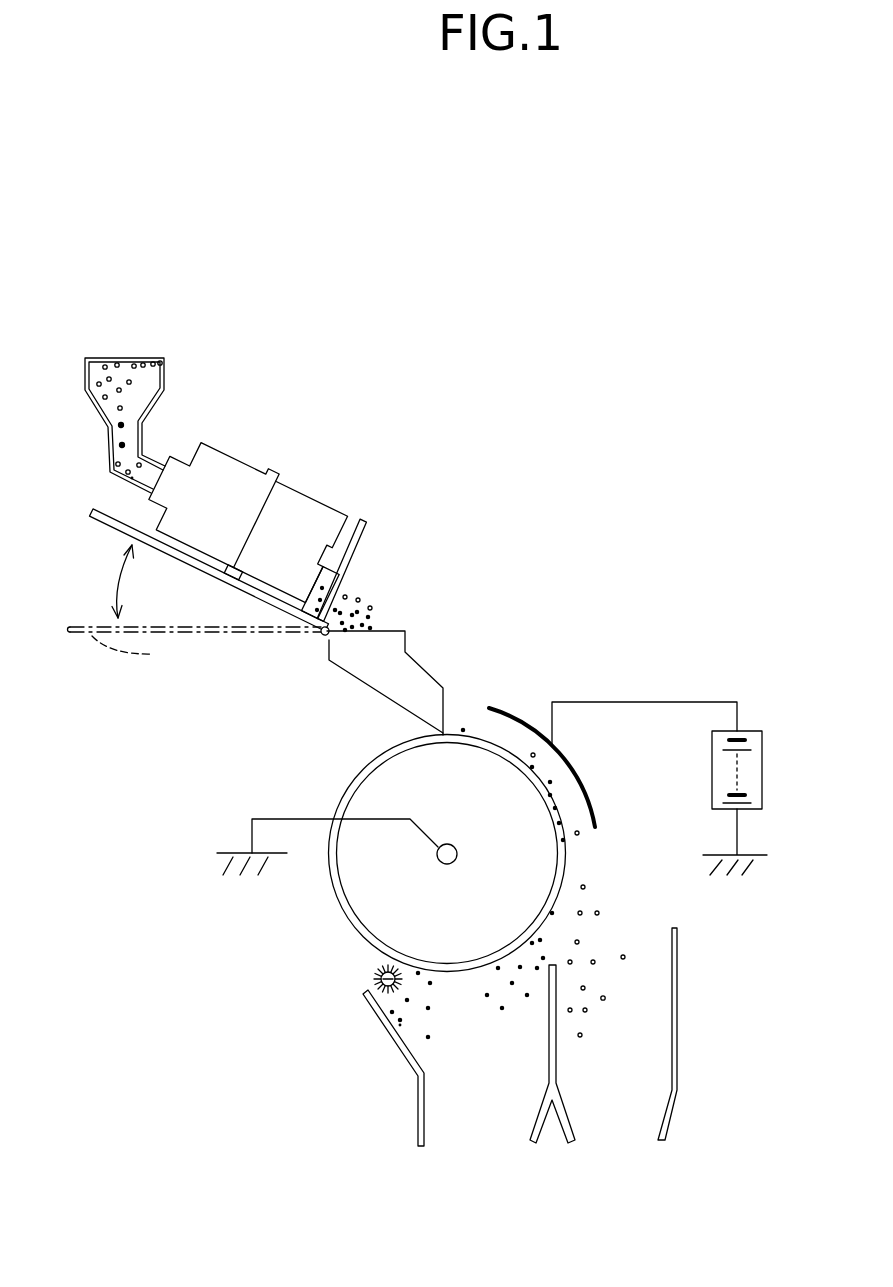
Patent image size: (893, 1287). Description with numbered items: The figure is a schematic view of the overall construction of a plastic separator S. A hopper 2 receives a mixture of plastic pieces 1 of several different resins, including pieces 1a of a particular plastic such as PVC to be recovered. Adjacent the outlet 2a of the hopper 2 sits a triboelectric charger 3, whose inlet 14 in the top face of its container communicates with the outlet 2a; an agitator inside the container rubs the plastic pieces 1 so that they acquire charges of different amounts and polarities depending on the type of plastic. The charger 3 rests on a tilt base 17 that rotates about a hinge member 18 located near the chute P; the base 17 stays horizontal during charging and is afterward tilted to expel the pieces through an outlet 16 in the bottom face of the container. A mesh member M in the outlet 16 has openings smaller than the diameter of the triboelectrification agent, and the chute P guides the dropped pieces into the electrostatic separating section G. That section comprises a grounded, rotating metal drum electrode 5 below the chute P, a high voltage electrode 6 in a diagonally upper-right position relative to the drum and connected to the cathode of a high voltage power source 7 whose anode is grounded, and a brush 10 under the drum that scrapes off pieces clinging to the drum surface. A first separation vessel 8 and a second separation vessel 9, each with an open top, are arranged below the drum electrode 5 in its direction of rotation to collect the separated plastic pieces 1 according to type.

The plastic pieces 1 is at (127, 377).
The pieces of a particular plastic 1a is at (110, 465).
The hopper 2 is at (163, 377).
The outlet 2a is at (114, 529).
The triboelectric charger 3 is at (320, 500).
The metal drum electrode 5 is at (342, 897).
The high voltage electrode 6 is at (577, 767).
The high voltage power source 7 is at (763, 767).
The first separation vessel 8 is at (679, 1053).
The second separation vessel 9 is at (418, 1100).
The brush 10 is at (377, 979).
The inlet 14 is at (162, 480).
The outlet 16 is at (296, 614).
The tilt base 17 is at (186, 568).
The hinge member 18 is at (326, 637).
The mesh member M is at (368, 552).
The chute P is at (420, 678).
The plastic separator S is at (503, 592).
The electrostatic separating section G is at (632, 855).